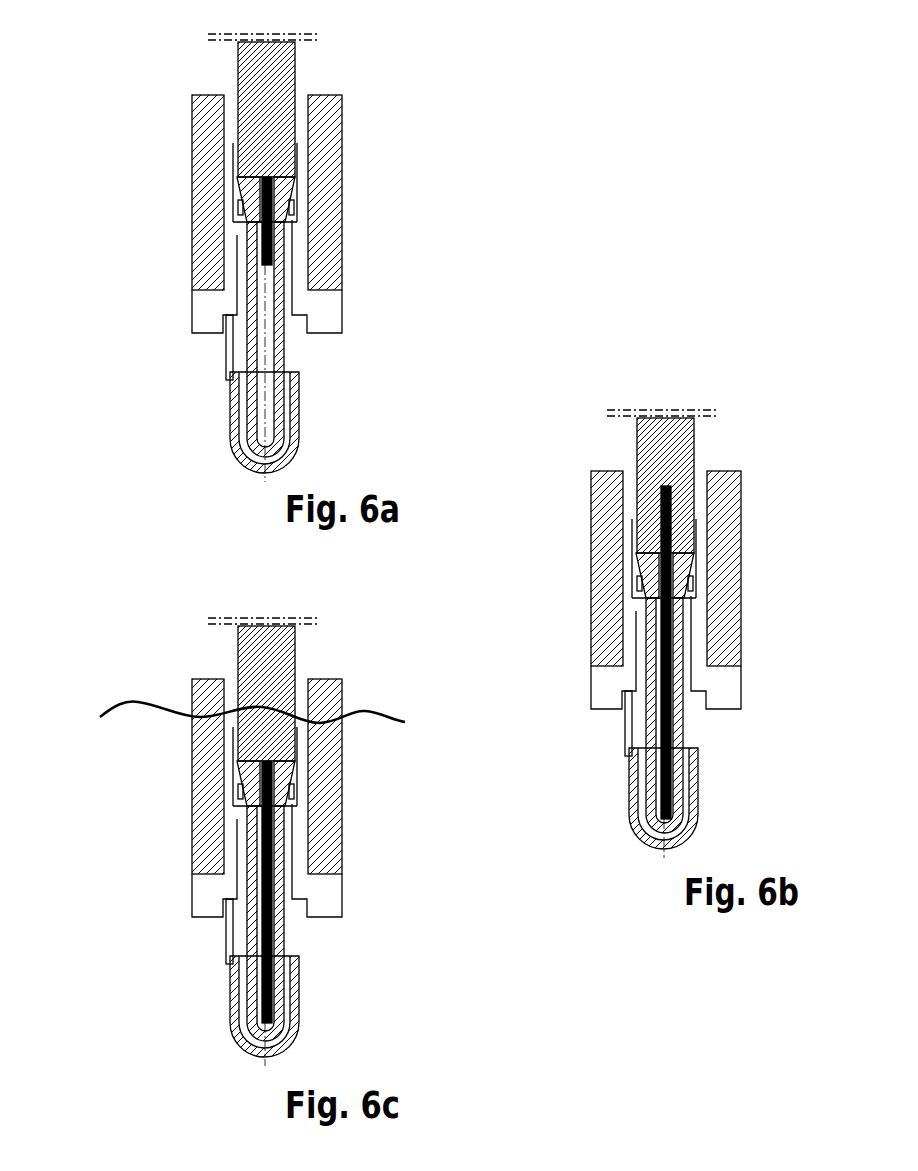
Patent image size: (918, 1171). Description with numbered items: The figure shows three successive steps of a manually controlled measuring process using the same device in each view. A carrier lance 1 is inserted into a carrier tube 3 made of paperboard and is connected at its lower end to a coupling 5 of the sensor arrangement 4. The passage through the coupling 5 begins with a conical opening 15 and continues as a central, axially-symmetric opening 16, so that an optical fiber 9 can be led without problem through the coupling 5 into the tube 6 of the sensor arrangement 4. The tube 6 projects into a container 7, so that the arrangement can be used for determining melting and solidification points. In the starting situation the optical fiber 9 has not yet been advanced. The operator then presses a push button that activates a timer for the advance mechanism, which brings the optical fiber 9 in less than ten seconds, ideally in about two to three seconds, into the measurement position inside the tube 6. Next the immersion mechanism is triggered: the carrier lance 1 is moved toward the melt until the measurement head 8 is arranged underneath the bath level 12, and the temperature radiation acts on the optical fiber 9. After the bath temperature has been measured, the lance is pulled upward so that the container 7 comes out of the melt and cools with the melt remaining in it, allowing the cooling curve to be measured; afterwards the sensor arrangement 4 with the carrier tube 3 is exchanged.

In FIG. 6A, the carrier lance 1 is at (290, 57).
In FIG. 6B, the carrier lance 1 is at (698, 485).
In FIG. 6C, the carrier lance 1 is at (299, 693).
In FIG. 6A, the carrier tube 3 is at (340, 127).
In FIG. 6B, the carrier tube 3 is at (702, 568).
In FIG. 6C, the carrier tube 3 is at (301, 764).
In FIG. 6A, the sensor arrangement 4 is at (372, 325).
In FIG. 6A, the coupling 5 is at (292, 184).
In FIG. 6B, the coupling 5 is at (724, 575).
In FIG. 6C, the coupling 5 is at (325, 772).
In FIG. 6A, the tube 6 is at (280, 269).
In FIG. 6B, the tube 6 is at (729, 715).
In FIG. 6C, the tube 6 is at (323, 923).
In FIG. 6A, the container 7 is at (300, 432).
In FIG. 6B, the container 7 is at (701, 798).
In FIG. 6C, the container 7 is at (301, 1006).
In FIG. 6A, the measurement head 8 is at (338, 303).
In FIG. 6B, the measurement head 8 is at (702, 676).
In FIG. 6C, the measurement head 8 is at (299, 884).
In FIG. 6A, the optical fiber 9 is at (268, 235).
In FIG. 6B, the optical fiber 9 is at (722, 574).
In FIG. 6C, the optical fiber 9 is at (318, 845).
In FIG. 6C, the bath level 12 is at (290, 700).
In FIG. 6A, the conical opening 15 is at (266, 183).
In FIG. 6B, the conical opening 15 is at (586, 568).
In FIG. 6C, the conical opening 15 is at (184, 768).
In FIG. 6A, the central axially-symmetric opening 16 is at (262, 220).
In FIG. 6B, the central axially-symmetric opening 16 is at (588, 652).
In FIG. 6C, the central axially-symmetric opening 16 is at (189, 892).